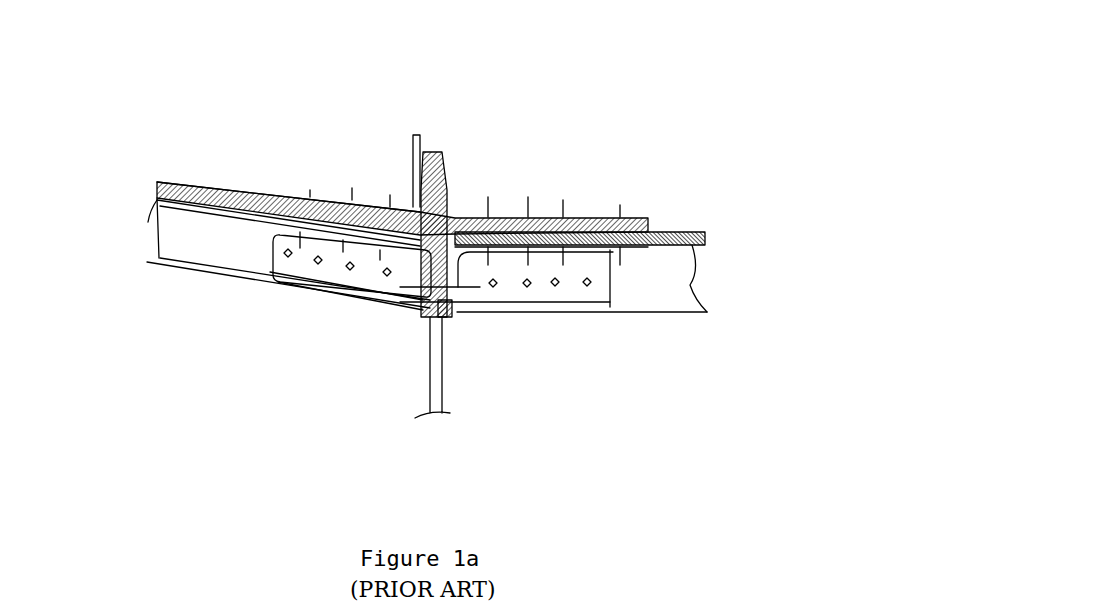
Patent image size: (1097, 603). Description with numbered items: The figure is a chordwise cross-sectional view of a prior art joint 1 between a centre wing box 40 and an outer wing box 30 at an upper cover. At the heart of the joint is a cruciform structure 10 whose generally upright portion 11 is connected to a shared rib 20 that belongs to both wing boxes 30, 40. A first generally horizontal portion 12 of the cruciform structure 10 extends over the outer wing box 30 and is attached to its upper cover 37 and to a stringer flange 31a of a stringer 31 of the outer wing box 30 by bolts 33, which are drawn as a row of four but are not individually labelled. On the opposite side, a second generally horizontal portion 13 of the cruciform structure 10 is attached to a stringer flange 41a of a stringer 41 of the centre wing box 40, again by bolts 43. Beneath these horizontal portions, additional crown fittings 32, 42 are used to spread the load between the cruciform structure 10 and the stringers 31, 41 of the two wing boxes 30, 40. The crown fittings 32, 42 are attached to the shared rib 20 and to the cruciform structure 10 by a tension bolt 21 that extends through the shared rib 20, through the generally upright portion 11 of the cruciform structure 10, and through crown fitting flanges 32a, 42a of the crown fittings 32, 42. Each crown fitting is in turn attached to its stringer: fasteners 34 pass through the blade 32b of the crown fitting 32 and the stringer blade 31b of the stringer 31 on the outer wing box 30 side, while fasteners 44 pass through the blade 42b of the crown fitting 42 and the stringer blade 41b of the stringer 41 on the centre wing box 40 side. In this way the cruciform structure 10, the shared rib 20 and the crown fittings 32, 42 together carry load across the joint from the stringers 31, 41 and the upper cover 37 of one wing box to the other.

The prior art beam connection assembly 1 is at (627, 84).
The cruciform structure 10 is at (447, 178).
The generally upright portion 11 is at (455, 312).
The first generally horizontal portion 12 is at (320, 196).
The second generally horizontal portion 13 is at (593, 218).
The shared rib 20 is at (432, 368).
The tension bolt 21 is at (467, 290).
The outer wing box 30 is at (185, 315).
The stringer 31 is at (160, 236).
The stringer flange 31a is at (160, 218).
The stringer blade 31b is at (158, 254).
The crown fitting 32 is at (306, 272).
The crown fitting flange 32a is at (418, 196).
The blade 32b is at (370, 280).
The bolts 33 is at (262, 190).
The fasteners 34 is at (282, 258).
The upper cover 37 is at (182, 186).
The centre wing box 40 is at (680, 335).
The stringer 41 is at (672, 274).
The stringer flange 41a is at (702, 233).
The stringer blade 41b is at (647, 293).
The crown fitting 42 is at (555, 292).
The crown fitting flange 42a is at (498, 253).
The blade 42b is at (602, 295).
The bolts 43 is at (530, 205).
The fasteners 44 is at (600, 278).